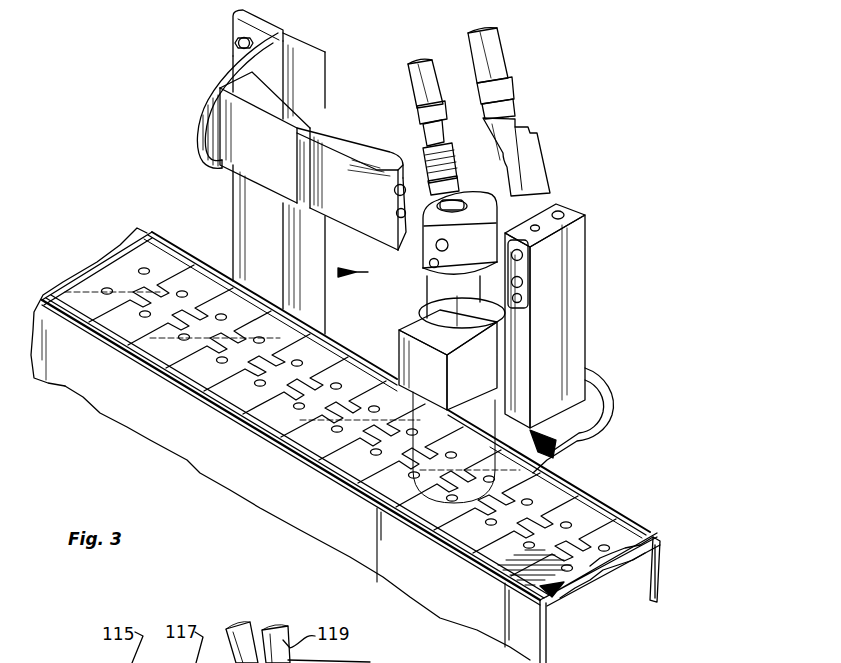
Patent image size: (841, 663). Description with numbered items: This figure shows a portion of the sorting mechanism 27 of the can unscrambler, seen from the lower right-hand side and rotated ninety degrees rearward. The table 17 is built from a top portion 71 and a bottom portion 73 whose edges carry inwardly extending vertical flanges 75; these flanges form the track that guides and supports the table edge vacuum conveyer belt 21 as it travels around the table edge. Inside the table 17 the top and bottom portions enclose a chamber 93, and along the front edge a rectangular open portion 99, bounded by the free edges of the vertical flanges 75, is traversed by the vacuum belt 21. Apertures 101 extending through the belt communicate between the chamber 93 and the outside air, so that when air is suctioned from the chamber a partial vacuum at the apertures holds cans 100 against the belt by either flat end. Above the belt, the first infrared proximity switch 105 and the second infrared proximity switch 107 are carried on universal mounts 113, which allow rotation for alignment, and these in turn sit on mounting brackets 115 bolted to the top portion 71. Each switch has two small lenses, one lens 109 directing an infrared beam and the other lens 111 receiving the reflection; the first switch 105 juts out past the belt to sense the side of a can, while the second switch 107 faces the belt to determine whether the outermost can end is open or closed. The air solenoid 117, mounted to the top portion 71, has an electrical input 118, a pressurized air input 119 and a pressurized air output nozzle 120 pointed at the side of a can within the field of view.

The table 17 is at (190, 445).
The table edge vacuum conveyer belt 21 is at (621, 527).
The sorting mechanism 27 is at (338, 272).
The top portion 71 is at (660, 548).
The bottom portion 73 is at (150, 408).
The vertical flanges 75 is at (660, 572).
The chamber 93 is at (633, 583).
The open portion 99 is at (577, 588).
The cans 100 is at (420, 490).
The apertures 101 is at (512, 574).
The first infrared proximity switch 105 is at (578, 303).
The second infrared proximity switch 107 is at (346, 133).
The lens 109 is at (523, 279).
The lens 111 is at (523, 296).
The universal mounts 113 is at (198, 116).
The mounting brackets 115 is at (313, 67).
The air solenoid 117 is at (543, 187).
The electrical input 118 is at (498, 55).
The pressurized air input 119 is at (422, 68).
The pressurized air output nozzle 120 is at (523, 265).